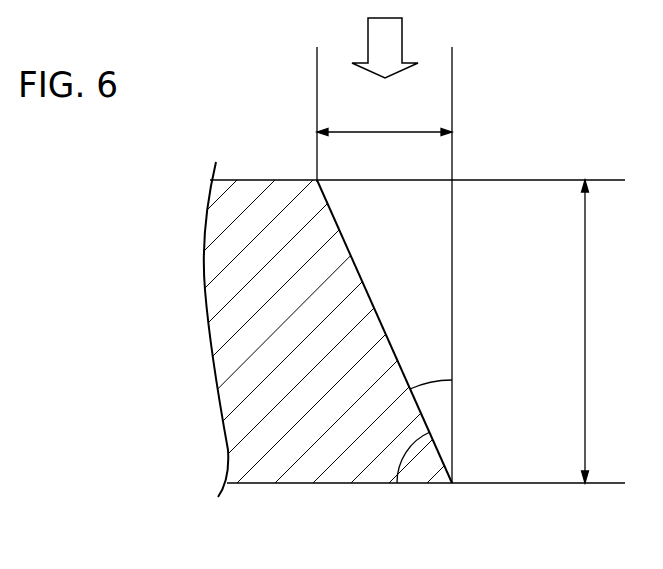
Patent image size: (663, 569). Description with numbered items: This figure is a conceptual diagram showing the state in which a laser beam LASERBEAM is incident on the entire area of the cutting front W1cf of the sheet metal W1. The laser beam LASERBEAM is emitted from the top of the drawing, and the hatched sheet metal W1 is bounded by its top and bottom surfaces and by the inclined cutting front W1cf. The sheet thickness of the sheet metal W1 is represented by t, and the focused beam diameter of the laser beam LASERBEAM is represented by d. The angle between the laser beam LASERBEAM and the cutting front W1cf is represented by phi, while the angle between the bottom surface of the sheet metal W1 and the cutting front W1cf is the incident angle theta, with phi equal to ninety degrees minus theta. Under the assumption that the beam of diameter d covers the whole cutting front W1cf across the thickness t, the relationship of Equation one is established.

The sheet metal W1 is at (268, 465).
The cutting front W1cf is at (349, 331).
The laser beam LASERBEAM is at (452, 97).
The focused beam diameter d is at (384, 121).
The sheet thickness t is at (591, 331).